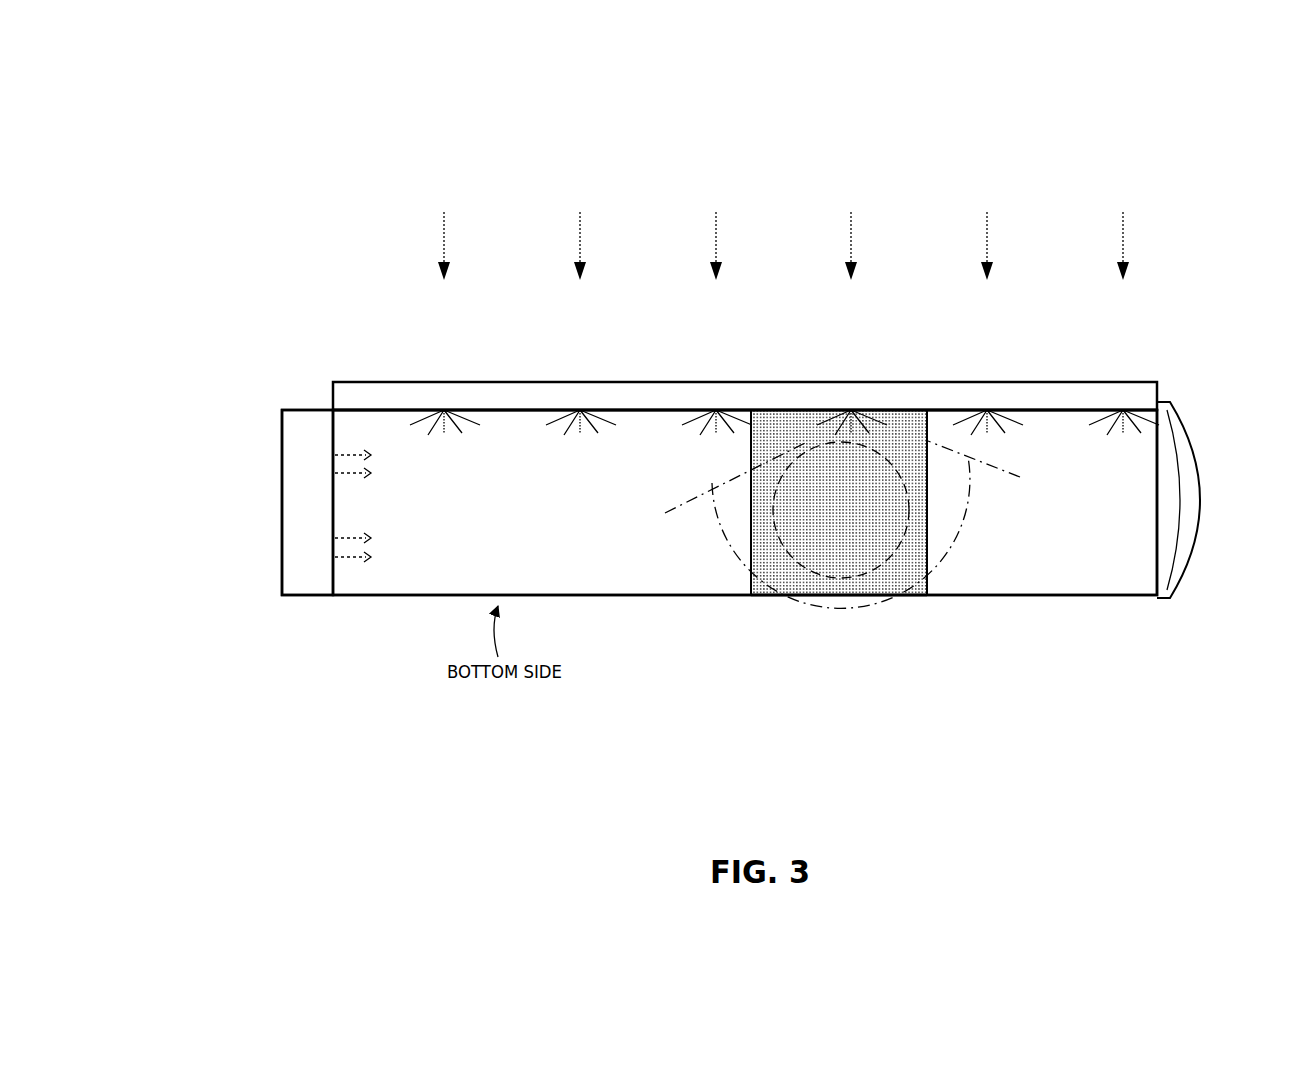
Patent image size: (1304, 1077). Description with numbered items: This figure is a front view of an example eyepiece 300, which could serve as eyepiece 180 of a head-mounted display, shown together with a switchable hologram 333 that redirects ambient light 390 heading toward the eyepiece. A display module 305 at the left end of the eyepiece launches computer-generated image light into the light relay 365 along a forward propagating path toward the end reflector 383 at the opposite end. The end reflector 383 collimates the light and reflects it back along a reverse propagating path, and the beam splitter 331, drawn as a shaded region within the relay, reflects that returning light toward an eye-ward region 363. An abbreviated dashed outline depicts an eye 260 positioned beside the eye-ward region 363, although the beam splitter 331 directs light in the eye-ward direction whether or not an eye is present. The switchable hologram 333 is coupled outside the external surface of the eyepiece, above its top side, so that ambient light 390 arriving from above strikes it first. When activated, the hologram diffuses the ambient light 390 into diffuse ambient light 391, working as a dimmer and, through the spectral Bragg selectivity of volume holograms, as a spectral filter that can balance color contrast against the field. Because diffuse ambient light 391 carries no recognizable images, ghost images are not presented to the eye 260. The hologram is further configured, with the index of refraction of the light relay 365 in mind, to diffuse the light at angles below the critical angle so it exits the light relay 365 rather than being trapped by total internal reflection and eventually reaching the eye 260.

The eyepiece 300 is at (1204, 92).
The ambient light 390 is at (293, 295).
The switchable hologram 333 is at (345, 391).
The display module 305 is at (292, 505).
The light relay 365 is at (377, 597).
The eyepiece 180 is at (1143, 402).
The diffuse ambient light 391 is at (552, 427).
The beam splitter 331 is at (787, 436).
The eye-ward region 363 is at (812, 566).
The eye 260 is at (904, 636).
The end reflector 383 is at (1180, 557).